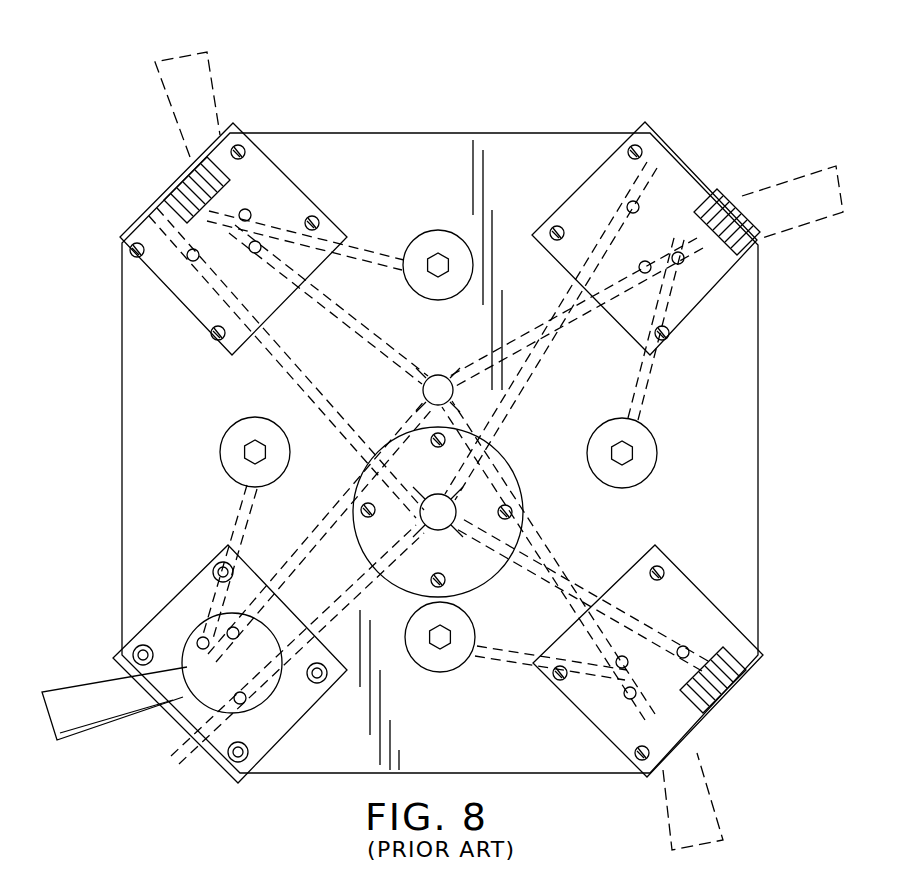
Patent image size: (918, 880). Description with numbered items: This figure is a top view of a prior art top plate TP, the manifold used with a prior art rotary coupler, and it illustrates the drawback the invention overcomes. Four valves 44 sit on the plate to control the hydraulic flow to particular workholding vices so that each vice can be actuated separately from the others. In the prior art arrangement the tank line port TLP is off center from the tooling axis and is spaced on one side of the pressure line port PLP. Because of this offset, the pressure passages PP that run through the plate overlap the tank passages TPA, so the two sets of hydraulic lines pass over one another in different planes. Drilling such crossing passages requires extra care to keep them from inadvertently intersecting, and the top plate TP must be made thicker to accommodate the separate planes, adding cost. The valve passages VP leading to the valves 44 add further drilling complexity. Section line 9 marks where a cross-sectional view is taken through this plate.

The valve 44 is at (285, 173).
The valve passage VP is at (370, 245).
The top plate TP is at (733, 412).
The tank line port TLP is at (440, 375).
The pressure line port PLP is at (442, 530).
The pressure passages PP is at (305, 378).
The tank passages TPA is at (527, 330).
The section line 9 is at (593, 530).